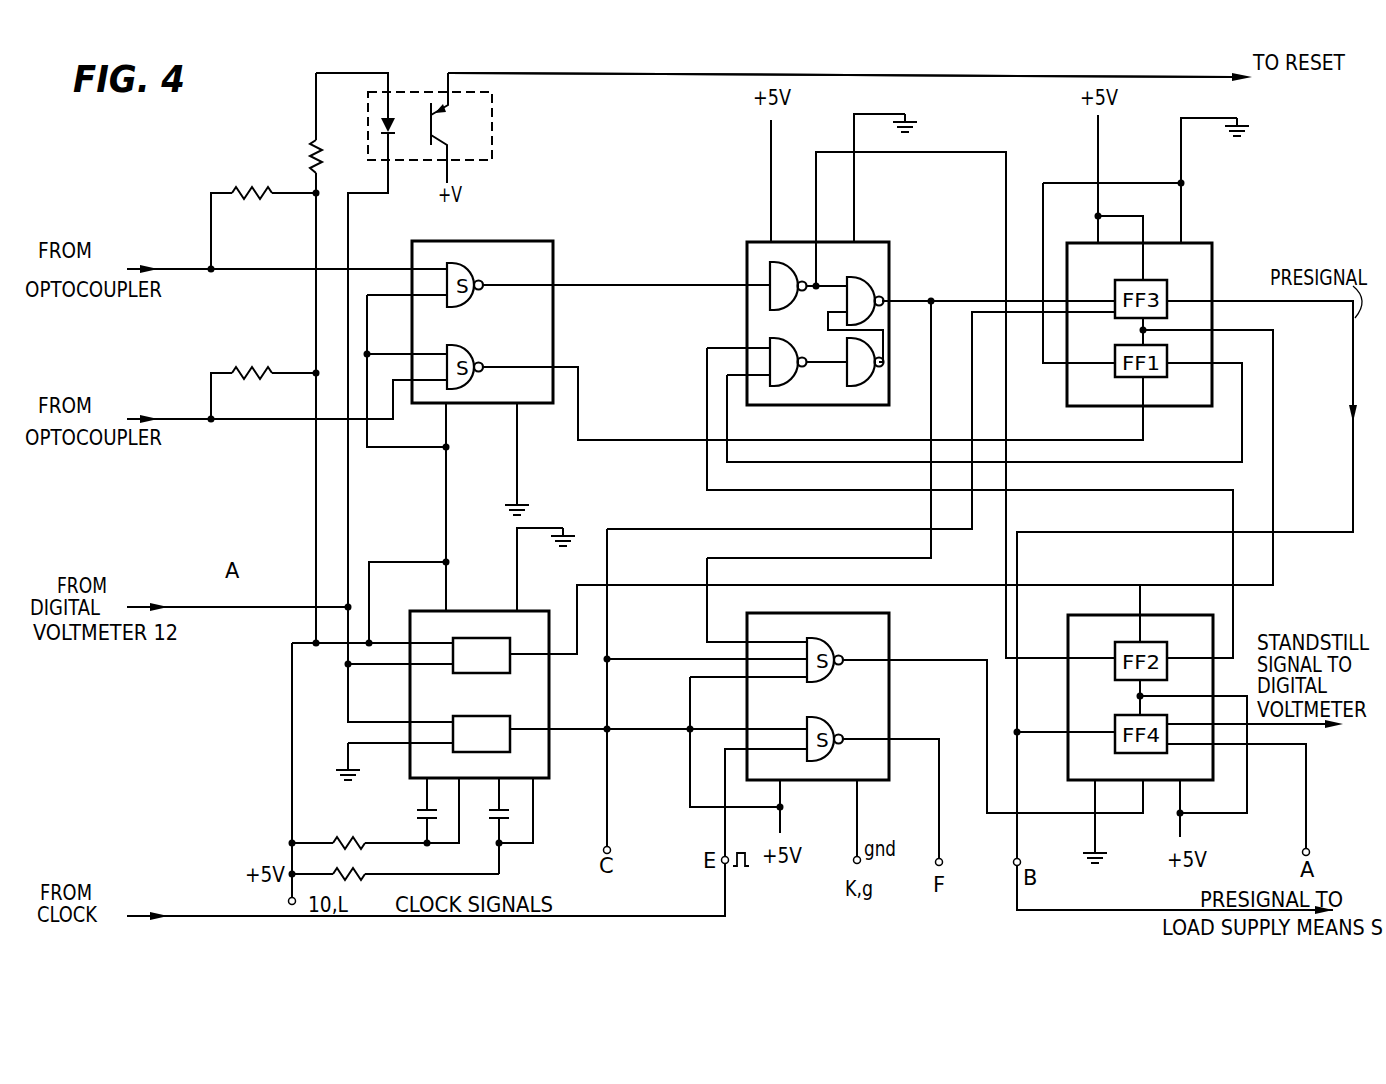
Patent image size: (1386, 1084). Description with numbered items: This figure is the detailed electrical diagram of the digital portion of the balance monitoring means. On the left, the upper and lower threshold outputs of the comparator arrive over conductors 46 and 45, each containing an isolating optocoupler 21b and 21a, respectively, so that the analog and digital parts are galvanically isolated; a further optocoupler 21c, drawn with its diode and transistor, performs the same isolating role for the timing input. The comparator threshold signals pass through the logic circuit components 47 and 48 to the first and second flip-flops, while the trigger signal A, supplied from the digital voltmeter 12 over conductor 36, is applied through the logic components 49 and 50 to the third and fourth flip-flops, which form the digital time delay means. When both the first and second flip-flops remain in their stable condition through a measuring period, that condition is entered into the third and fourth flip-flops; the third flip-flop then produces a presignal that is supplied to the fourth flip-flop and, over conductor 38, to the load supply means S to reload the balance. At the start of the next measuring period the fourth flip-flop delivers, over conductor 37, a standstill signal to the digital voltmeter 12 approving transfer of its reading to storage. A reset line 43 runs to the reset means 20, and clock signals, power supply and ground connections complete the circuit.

The optocoupler 21c is at (492, 120).
The isolating optocoupler 21a is at (88, 466).
The isolating optocoupler 21b is at (88, 316).
The conductor 45 is at (257, 422).
The conductor 46 is at (198, 271).
The logic circuit component 47 is at (555, 258).
The logic circuit component 48 is at (892, 262).
The logic component 49 is at (552, 714).
The logic component 50 is at (885, 713).
The conductor 36 is at (232, 610).
The conductor 37 is at (1318, 730).
The conductor 38 is at (1142, 910).
The reset line to reset means 43 is at (980, 77).
The digital voltmeter 12 is at (1353, 736).
The control means 20 is at (1303, 88).